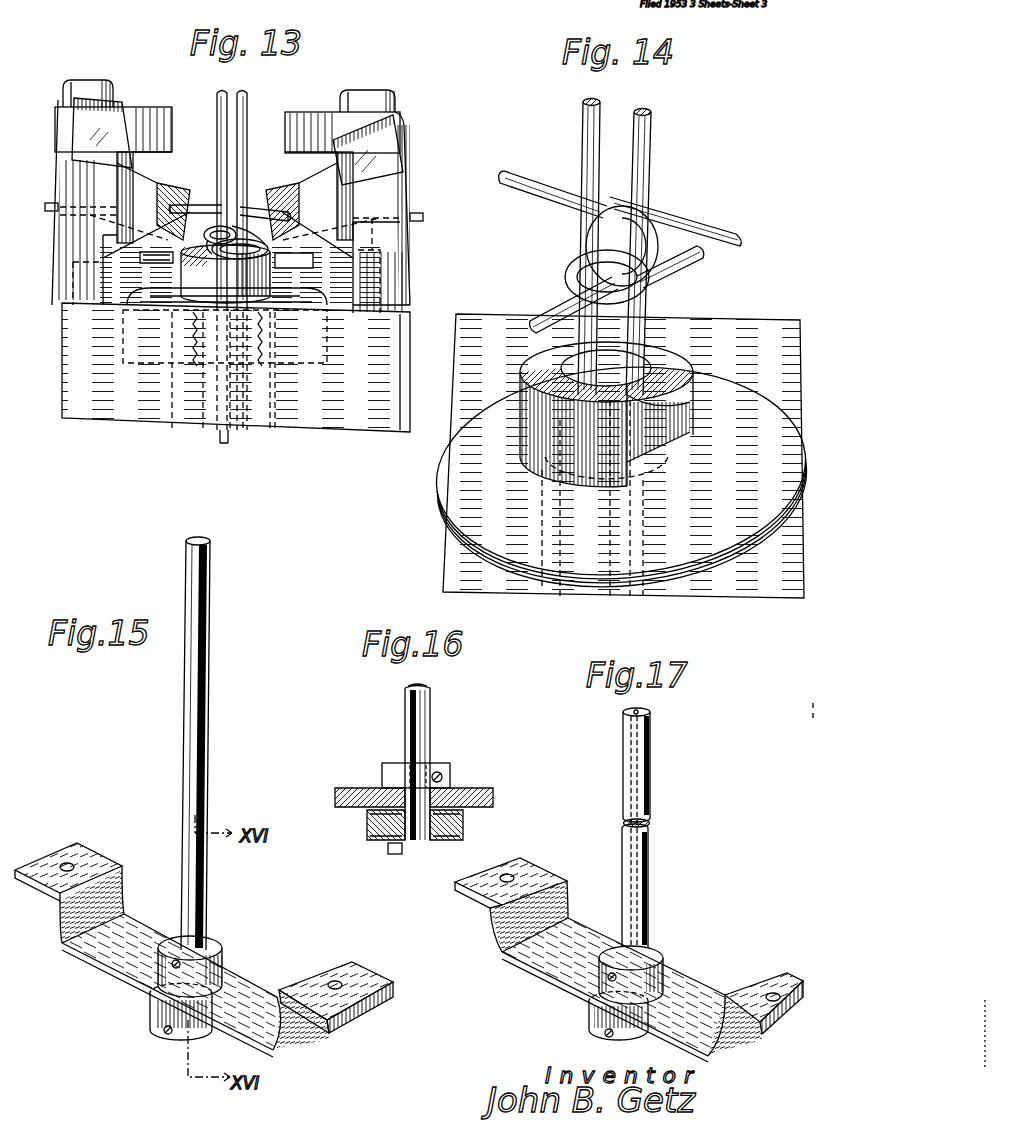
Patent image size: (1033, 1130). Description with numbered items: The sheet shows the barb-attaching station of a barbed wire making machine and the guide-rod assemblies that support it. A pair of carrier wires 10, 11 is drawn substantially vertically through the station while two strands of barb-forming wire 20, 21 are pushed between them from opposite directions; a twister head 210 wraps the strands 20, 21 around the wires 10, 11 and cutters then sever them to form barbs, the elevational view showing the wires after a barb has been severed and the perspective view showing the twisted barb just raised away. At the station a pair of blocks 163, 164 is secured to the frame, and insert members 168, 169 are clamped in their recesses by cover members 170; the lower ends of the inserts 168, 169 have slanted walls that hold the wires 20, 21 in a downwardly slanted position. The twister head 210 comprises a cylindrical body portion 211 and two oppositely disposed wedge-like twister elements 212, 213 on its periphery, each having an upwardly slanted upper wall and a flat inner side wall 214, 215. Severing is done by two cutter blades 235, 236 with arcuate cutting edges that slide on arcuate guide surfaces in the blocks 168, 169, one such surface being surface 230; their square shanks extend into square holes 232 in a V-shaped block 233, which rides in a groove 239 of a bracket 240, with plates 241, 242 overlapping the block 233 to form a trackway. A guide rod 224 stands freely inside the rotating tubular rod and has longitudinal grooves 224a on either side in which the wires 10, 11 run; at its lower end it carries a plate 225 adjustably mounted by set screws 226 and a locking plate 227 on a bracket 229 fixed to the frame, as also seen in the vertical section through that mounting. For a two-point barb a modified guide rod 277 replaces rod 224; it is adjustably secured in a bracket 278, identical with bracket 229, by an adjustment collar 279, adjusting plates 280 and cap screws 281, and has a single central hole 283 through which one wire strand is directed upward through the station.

In FIG. 13, the carrier wire 10 is at (245, 92).
In FIG. 14, the carrier wire 10 is at (652, 142).
In FIG. 13, the carrier wire 11 is at (221, 92).
In FIG. 14, the carrier wire 11 is at (583, 130).
In FIG. 13, the barb-forming wire 20 is at (53, 208).
In FIG. 14, the barb-forming wire 20 is at (507, 175).
In FIG. 13, the barb-forming wire 21 is at (423, 218).
In FIG. 14, the barb-forming wire 21 is at (718, 233).
In FIG. 13, the block 163 is at (72, 303).
In FIG. 13, the block 164 is at (403, 293).
In FIG. 13, the insert member 168 is at (57, 185).
In FIG. 13, the insert member 169 is at (405, 174).
In FIG. 13, the cover member 170 is at (78, 140).
In FIG. 13, the twister head 210 is at (196, 277).
In FIG. 14, the twister head 210 is at (709, 369).
In FIG. 14, the cylindrical body portion 211 is at (545, 372).
In FIG. 14, the twister element 212 is at (645, 330).
In FIG. 14, the twister element 213 is at (577, 405).
In FIG. 14, the inner side wall 214 is at (557, 327).
In FIG. 14, the inner side wall 215 is at (683, 400).
In FIG. 15, the guide rod 224 is at (212, 720).
In FIG. 16, the guide rod 224 is at (432, 693).
In FIG. 15, the longitudinal groove 224a is at (190, 540).
In FIG. 16, the longitudinal groove 224a is at (410, 700).
In FIG. 15, the plate 225 is at (153, 1002).
In FIG. 16, the plate 225 is at (437, 845).
In FIG. 15, the set screw 226 is at (233, 967).
In FIG. 16, the set screw 226 is at (392, 847).
In FIG. 15, the locking plate 227 is at (213, 937).
In FIG. 16, the locking plate 227 is at (447, 763).
In FIG. 13, the bracket 229 is at (160, 215).
In FIG. 15, the bracket 229 is at (258, 975).
In FIG. 16, the bracket 229 is at (498, 767).
In FIG. 13, the arcuate guide surface 230 is at (284, 190).
In FIG. 13, the square hole 232 is at (172, 188).
In FIG. 13, the V-shaped block 233 is at (233, 173).
In FIG. 13, the cutter blade 235 is at (176, 208).
In FIG. 13, the cutter blade 236 is at (290, 208).
In FIG. 13, the groove 239 is at (153, 167).
In FIG. 13, the bracket 240 is at (133, 153).
In FIG. 13, the plate 241 is at (122, 96).
In FIG. 13, the plate 242 is at (322, 113).
In FIG. 17, the guide rod 277 is at (648, 792).
In FIG. 17, the bracket 278 is at (687, 980).
In FIG. 17, the adjustment collar 279 is at (653, 948).
In FIG. 17, the adjusting plate 280 is at (590, 1012).
In FIG. 17, the cap screw 281 is at (606, 1034).
In FIG. 17, the central hole 283 is at (640, 714).